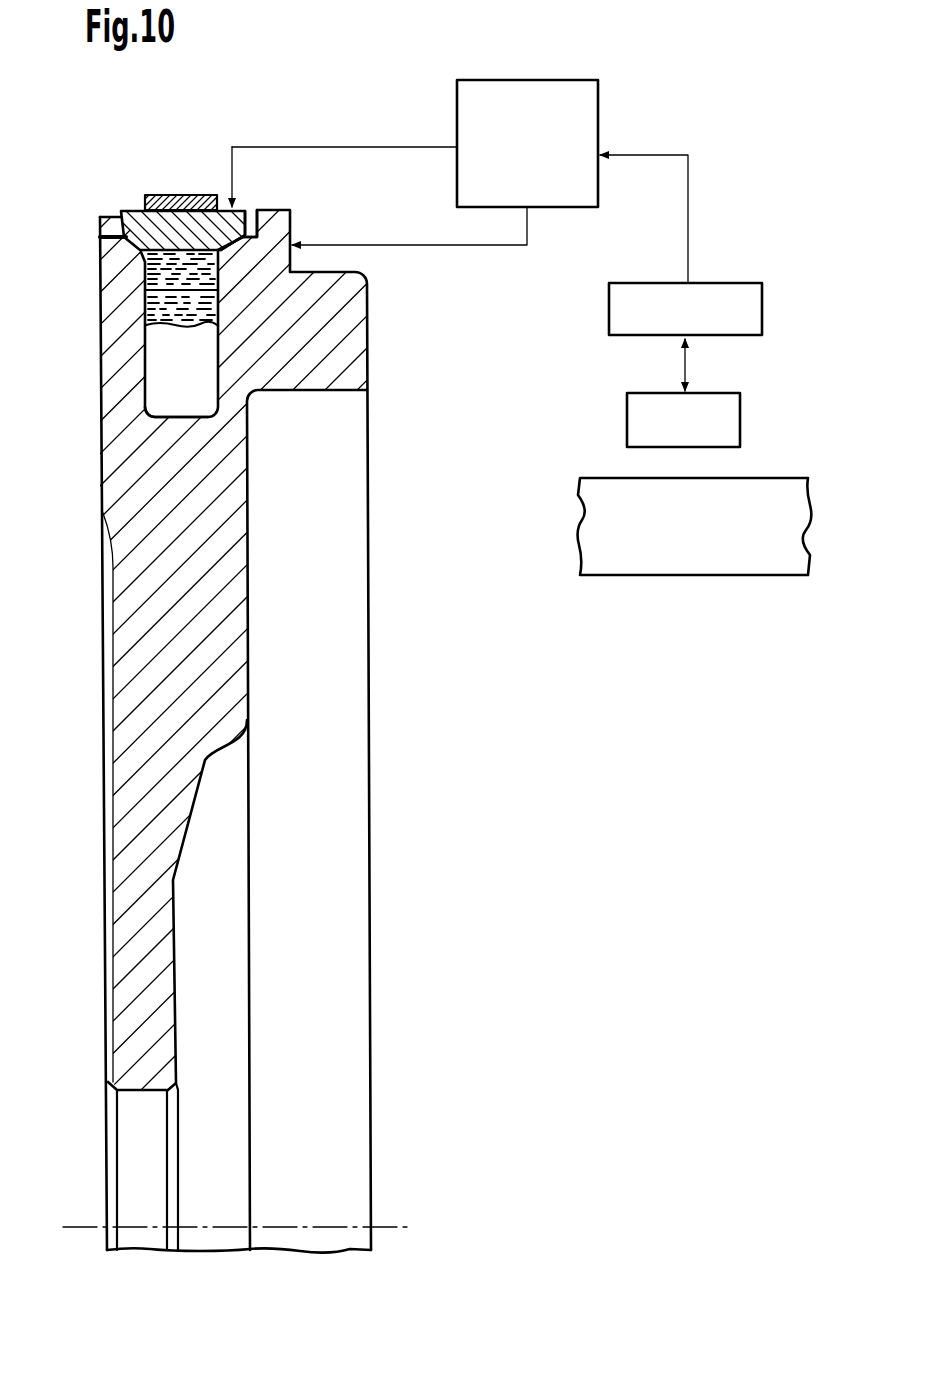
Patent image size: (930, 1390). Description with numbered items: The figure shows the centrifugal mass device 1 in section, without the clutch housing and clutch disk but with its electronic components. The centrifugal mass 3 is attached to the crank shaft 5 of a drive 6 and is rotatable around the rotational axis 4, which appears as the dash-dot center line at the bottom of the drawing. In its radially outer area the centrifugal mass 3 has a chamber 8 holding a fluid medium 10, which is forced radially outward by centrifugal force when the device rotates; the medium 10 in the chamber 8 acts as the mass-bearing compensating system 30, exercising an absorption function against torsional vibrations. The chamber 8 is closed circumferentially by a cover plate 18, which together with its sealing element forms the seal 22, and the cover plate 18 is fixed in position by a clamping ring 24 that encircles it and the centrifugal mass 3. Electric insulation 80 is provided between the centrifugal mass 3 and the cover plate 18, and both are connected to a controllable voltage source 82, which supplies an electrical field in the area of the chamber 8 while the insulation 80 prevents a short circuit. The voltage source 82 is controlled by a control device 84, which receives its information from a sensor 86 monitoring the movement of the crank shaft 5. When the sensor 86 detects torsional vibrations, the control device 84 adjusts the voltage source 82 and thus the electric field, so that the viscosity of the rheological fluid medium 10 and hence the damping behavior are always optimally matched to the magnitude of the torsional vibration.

The centrifugal mass device 1 is at (137, 659).
The centrifugal mass 3 is at (135, 818).
The rotational axis 4 is at (85, 1250).
The crank shaft 5 is at (738, 557).
The drive 6 is at (652, 579).
The chamber 8 is at (157, 370).
The fluid medium 10 is at (153, 305).
The cover plate 18 is at (228, 208).
The seal 22 is at (138, 228).
The clamping ring 24 is at (165, 196).
The compensating system 30 is at (165, 397).
The electric insulation 80 is at (125, 216).
The voltage source 82 is at (540, 97).
The control device 84 is at (730, 295).
The sensor 86 is at (733, 421).